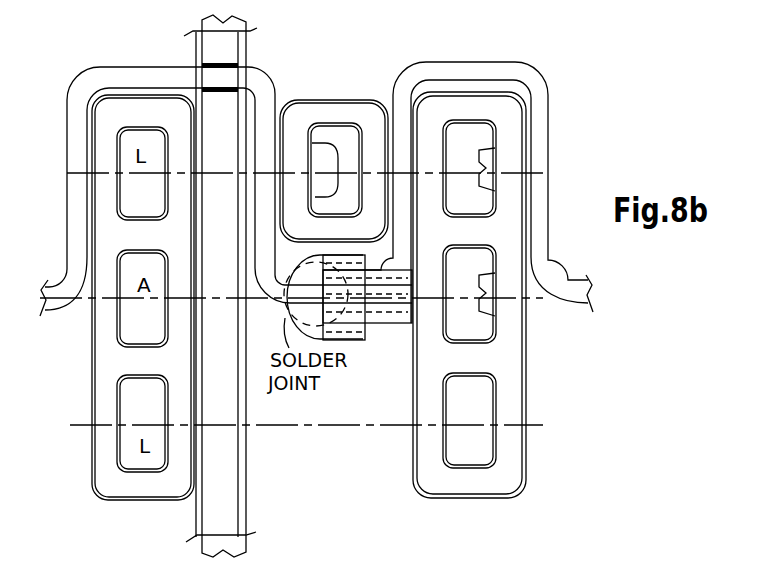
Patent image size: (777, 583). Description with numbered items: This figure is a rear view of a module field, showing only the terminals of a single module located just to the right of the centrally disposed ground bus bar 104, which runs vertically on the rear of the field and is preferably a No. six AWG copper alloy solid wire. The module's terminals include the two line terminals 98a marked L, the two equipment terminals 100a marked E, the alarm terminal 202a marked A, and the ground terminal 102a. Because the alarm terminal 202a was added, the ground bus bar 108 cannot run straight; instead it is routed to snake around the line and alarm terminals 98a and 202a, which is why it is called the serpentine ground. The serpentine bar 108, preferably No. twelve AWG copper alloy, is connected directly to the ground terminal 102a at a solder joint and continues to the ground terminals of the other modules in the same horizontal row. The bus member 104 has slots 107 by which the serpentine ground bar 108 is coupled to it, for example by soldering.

The slots 107 is at (215, 67).
The serpentine ground bus bar 108 is at (482, 72).
The ground bus bar 104 is at (222, 514).
The equipment terminal 100a is at (343, 145).
The line terminal 98a is at (478, 137).
The alarm terminal 202a is at (480, 323).
The ground terminal 102a is at (317, 318).